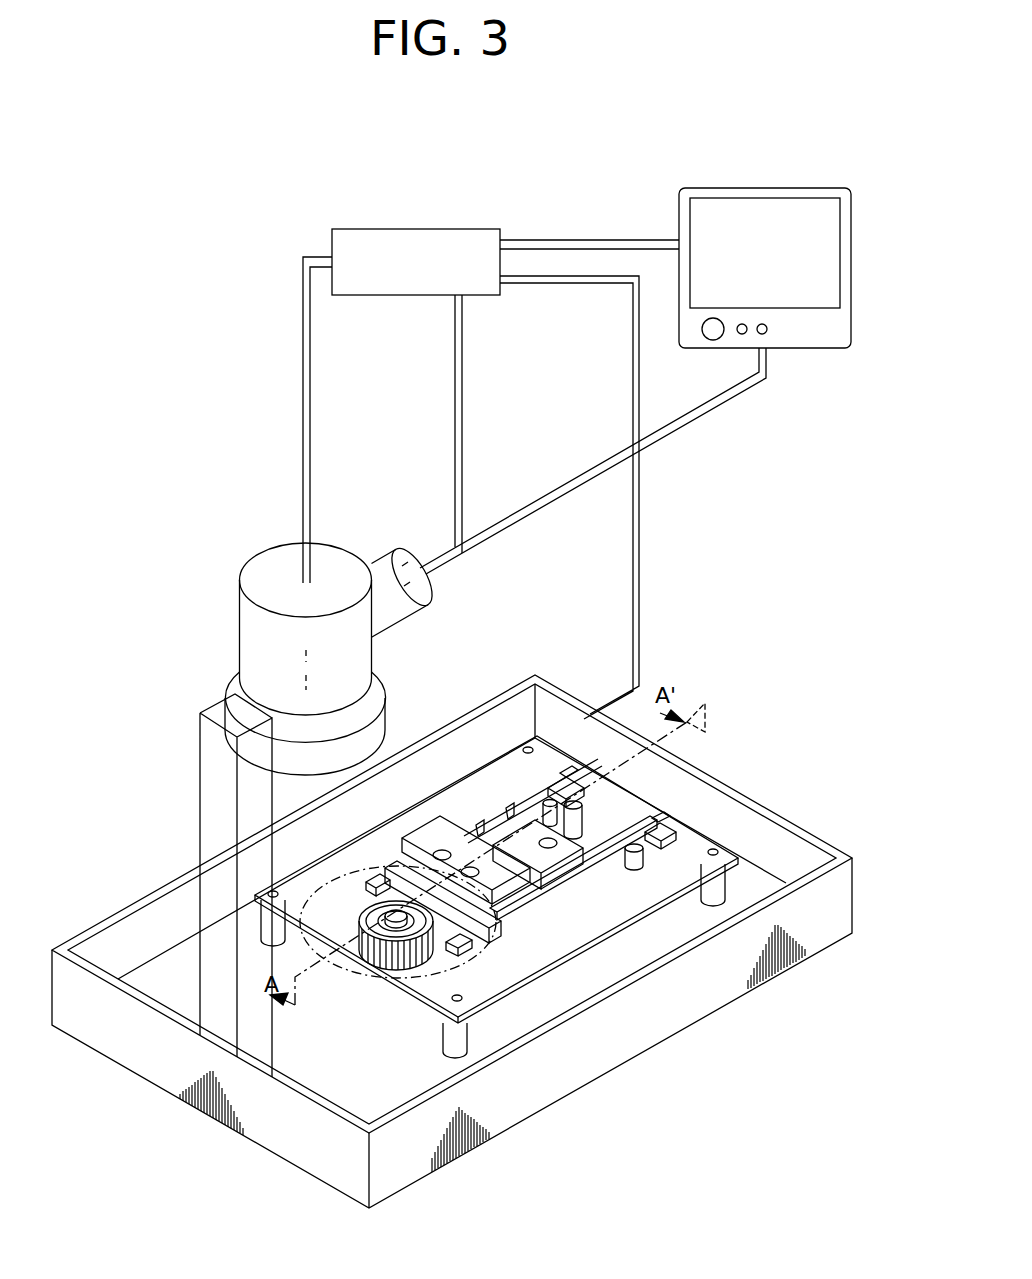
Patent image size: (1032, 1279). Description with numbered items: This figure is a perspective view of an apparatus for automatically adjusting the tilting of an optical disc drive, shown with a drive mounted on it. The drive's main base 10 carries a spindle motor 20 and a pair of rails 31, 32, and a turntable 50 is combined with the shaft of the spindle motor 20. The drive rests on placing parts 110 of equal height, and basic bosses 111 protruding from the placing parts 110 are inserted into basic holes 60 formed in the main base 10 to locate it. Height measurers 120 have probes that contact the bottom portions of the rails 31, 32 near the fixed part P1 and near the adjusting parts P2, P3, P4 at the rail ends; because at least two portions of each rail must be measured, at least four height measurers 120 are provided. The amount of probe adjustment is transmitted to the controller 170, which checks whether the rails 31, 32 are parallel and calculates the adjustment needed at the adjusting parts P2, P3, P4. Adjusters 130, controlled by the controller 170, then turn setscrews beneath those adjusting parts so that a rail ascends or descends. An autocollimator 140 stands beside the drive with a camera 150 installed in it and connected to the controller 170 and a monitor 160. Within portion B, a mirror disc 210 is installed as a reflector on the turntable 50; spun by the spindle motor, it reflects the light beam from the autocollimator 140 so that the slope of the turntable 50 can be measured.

The main base 10 is at (585, 915).
The spindle motor 20 is at (385, 986).
The rail 31 is at (580, 770).
The rail 32 is at (668, 834).
The turntable 50 is at (392, 924).
The basic hole 60 is at (549, 897).
The placing part 110 is at (723, 887).
The basic boss 111 is at (716, 850).
The height measurer 120 is at (535, 808).
The adjuster 130 is at (588, 806).
The autocollimator 140 is at (240, 621).
The camera 150 is at (414, 600).
The monitor 160 is at (765, 188).
The controller 170 is at (418, 229).
The mirror disc 210 is at (325, 890).
The portion B is at (432, 822).
The fixed part P1 is at (370, 872).
The adjusting part P2 is at (450, 965).
The adjusting part P3 is at (568, 762).
The adjusting part P4 is at (659, 810).